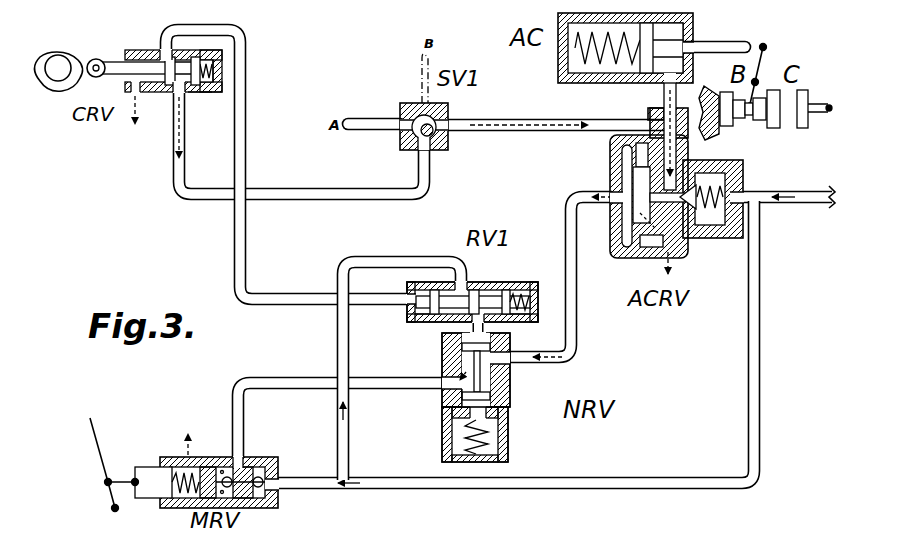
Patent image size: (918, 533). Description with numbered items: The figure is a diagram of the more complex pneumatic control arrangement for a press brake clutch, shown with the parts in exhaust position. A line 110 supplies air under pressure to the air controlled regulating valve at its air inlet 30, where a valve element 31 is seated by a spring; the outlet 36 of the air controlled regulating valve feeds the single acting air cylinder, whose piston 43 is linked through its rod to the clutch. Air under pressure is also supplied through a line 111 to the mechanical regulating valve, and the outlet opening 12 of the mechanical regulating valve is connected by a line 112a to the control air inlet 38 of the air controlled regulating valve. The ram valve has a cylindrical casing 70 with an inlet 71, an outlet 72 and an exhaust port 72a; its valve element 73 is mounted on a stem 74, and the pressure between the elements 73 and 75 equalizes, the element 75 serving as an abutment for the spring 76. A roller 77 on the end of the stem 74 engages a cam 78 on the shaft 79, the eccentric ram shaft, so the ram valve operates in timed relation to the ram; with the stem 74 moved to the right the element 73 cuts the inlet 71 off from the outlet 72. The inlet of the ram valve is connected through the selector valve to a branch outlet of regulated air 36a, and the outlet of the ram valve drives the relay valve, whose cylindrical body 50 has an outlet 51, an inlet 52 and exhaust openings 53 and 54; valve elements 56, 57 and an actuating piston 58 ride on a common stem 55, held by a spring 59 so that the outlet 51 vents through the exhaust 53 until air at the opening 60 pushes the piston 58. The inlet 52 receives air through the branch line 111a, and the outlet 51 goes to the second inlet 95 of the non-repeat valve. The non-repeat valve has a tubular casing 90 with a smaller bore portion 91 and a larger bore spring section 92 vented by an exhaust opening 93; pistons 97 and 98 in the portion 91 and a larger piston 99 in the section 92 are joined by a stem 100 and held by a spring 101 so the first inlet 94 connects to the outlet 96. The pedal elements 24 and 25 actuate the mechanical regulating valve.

The outlet opening 12 is at (243, 468).
The brake pedal lever 24 is at (92, 446).
The pedal link 25 is at (112, 507).
The air inlet 30 is at (745, 188).
The valve element 31 is at (692, 168).
The outlet 36 is at (676, 108).
The branch outlet of regulated air 36a is at (655, 115).
The control air inlet 38 is at (606, 188).
The piston 43 is at (655, 30).
The cylindrical body 50 is at (405, 322).
The outlet 51 is at (528, 322).
The inlet 52 is at (455, 283).
The exhaust opening 53 is at (502, 290).
The exhaust opening 54 is at (534, 310).
The common stem 55 is at (430, 318).
The valve element 56 is at (478, 290).
The valve element 57 is at (522, 290).
The actuating piston 58 is at (412, 283).
The spring 59 is at (534, 298).
The opening 60 is at (410, 305).
The cylindrical casing 70 is at (222, 52).
The inlet 71 is at (196, 93).
The outlet 72 is at (158, 50).
The exhaust port 72a is at (222, 68).
The valve element 73 is at (167, 90).
The stem 74 is at (180, 64).
The element 75 is at (207, 93).
The spring 76 is at (222, 82).
The roller 77 is at (99, 58).
The cam 78 is at (52, 87).
The shaft 79 is at (58, 55).
The tubular casing 90 is at (447, 462).
The smaller bore portion 91 is at (462, 378).
The larger bore spring section 92 is at (498, 450).
The exhaust opening 93 is at (480, 467).
The first inlet 94 is at (455, 395).
The second inlet 95 is at (512, 350).
The outlet 96 is at (533, 366).
The piston 97 is at (462, 348).
The piston 98 is at (455, 400).
The larger piston 99 is at (500, 425).
The stem 100 is at (512, 386).
The spring 101 is at (462, 450).
The line 110 is at (776, 208).
The line 111 is at (555, 492).
The branch line 111a is at (337, 412).
The line 112a is at (262, 378).